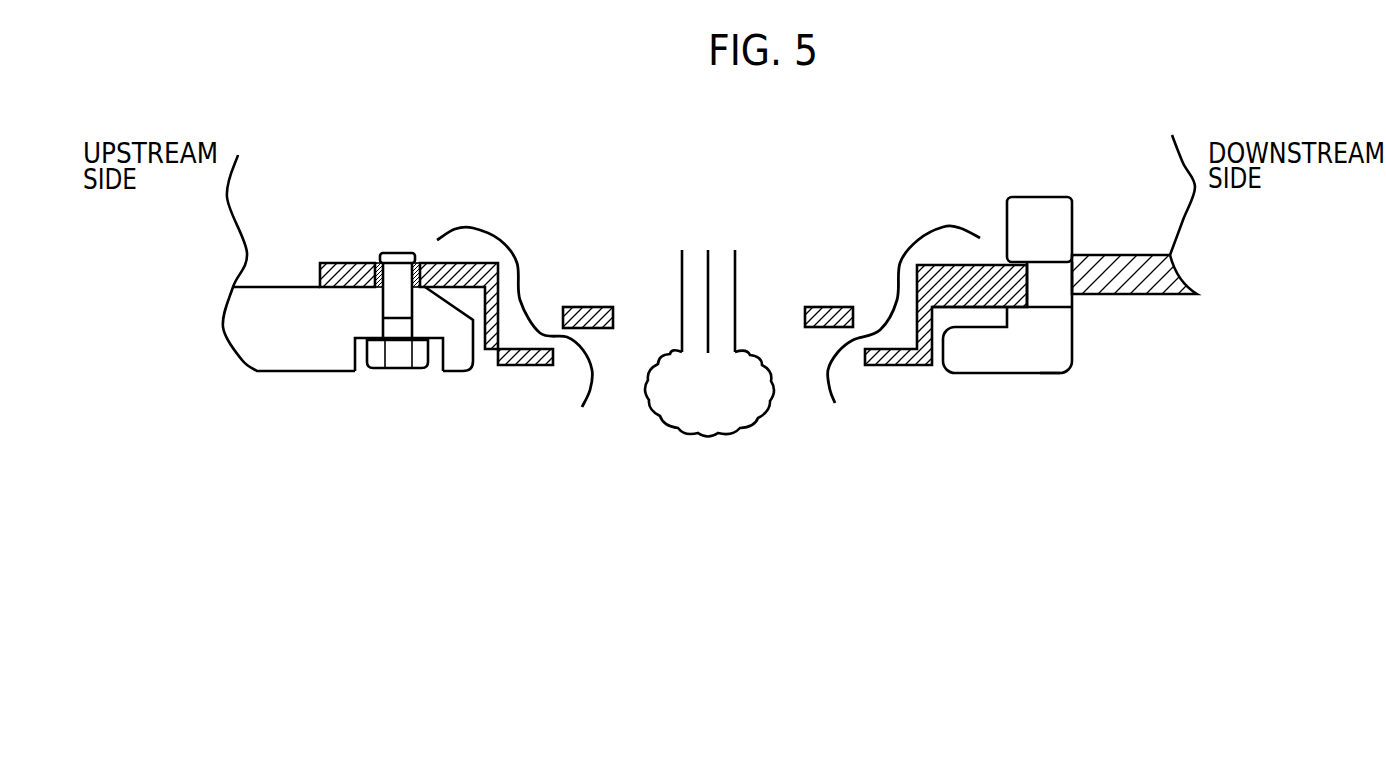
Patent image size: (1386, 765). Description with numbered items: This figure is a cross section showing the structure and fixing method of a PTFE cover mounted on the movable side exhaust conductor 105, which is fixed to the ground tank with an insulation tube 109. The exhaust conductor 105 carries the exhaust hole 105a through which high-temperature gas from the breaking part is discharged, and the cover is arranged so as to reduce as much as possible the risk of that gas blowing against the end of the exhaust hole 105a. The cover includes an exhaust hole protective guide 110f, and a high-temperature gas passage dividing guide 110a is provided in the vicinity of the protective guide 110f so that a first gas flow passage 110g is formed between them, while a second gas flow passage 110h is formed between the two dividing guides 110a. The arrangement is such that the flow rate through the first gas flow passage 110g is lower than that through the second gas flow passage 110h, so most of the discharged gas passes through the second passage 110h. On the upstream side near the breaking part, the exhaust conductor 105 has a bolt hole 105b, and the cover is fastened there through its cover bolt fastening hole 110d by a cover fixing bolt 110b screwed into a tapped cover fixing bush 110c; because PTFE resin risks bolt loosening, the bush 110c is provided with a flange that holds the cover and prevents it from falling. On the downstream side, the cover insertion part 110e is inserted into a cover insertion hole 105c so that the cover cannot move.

The movable side exhaust conductor 105 is at (967, 355).
The exhaust hole 105a is at (767, 348).
The bolt hole 105b is at (350, 371).
The cover insertion hole 105c is at (1057, 278).
The insulation tube 109 is at (1152, 297).
The high-temperature gas passage dividing guide 110a is at (587, 305).
The cover fixing bolt 110b is at (407, 371).
The cover fixing bush 110c is at (373, 263).
The cover bolt fastening hole 110d is at (317, 372).
The cover insertion part 110e is at (1047, 367).
The exhaust hole protective guide 110f is at (513, 366).
The first gas flow passage 110g is at (592, 367).
The second gas flow passage 110h is at (662, 303).